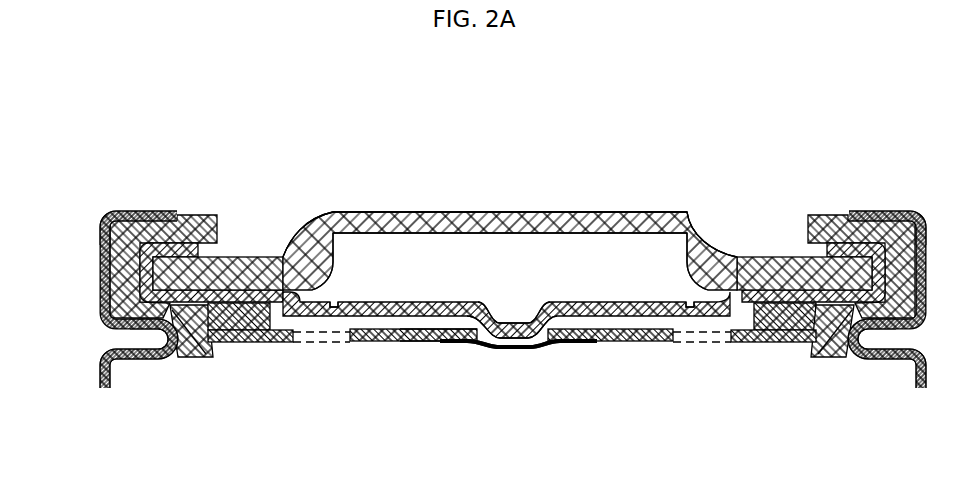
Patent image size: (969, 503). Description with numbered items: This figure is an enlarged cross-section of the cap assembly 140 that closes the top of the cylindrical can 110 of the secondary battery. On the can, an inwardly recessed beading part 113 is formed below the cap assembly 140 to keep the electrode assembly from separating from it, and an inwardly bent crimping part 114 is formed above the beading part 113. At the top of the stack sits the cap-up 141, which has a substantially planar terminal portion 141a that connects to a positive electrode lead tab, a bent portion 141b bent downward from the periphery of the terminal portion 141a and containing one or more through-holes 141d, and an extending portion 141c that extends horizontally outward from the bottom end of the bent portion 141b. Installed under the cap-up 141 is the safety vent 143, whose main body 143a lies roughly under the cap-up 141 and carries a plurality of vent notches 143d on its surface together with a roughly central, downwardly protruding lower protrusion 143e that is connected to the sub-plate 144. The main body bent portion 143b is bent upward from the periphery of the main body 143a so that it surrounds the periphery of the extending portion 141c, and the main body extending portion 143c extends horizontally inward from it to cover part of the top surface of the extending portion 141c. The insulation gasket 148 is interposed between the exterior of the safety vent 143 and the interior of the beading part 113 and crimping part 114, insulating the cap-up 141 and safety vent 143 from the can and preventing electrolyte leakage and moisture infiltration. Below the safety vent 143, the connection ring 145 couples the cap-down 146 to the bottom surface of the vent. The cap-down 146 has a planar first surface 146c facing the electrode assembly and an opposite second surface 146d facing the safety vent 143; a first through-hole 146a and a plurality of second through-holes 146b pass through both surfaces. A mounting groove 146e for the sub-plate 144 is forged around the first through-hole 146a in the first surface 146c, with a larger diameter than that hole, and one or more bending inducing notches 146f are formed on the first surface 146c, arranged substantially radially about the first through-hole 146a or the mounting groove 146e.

The cylindrical can 110 is at (469, 300).
The beading part 113 is at (127, 338).
The crimping part 114 is at (152, 208).
The cap assembly 140 is at (700, 172).
The cap-up 141 is at (510, 184).
The terminal portion 141a is at (557, 223).
The bent portion 141b is at (323, 260).
The extending portion 141c is at (267, 257).
The through-holes 141d is at (677, 214).
The safety vent 143 is at (595, 395).
The main body 143a is at (753, 307).
The main body bent portion 143b is at (881, 275).
The main body extending portion 143c is at (845, 255).
The vent notches 143d is at (512, 368).
The lower protrusion 143e is at (530, 343).
The sub-plate 144 is at (517, 343).
The connection ring 145 is at (512, 369).
The cap-down 146 is at (512, 398).
The first through-hole 146a is at (480, 343).
The second through-holes 146b is at (307, 337).
The first surface 146c is at (415, 343).
The second surface 146d is at (437, 343).
The mounting groove 146e is at (460, 343).
The bending inducing notches 146f is at (360, 343).
The insulation gasket 148 is at (193, 348).